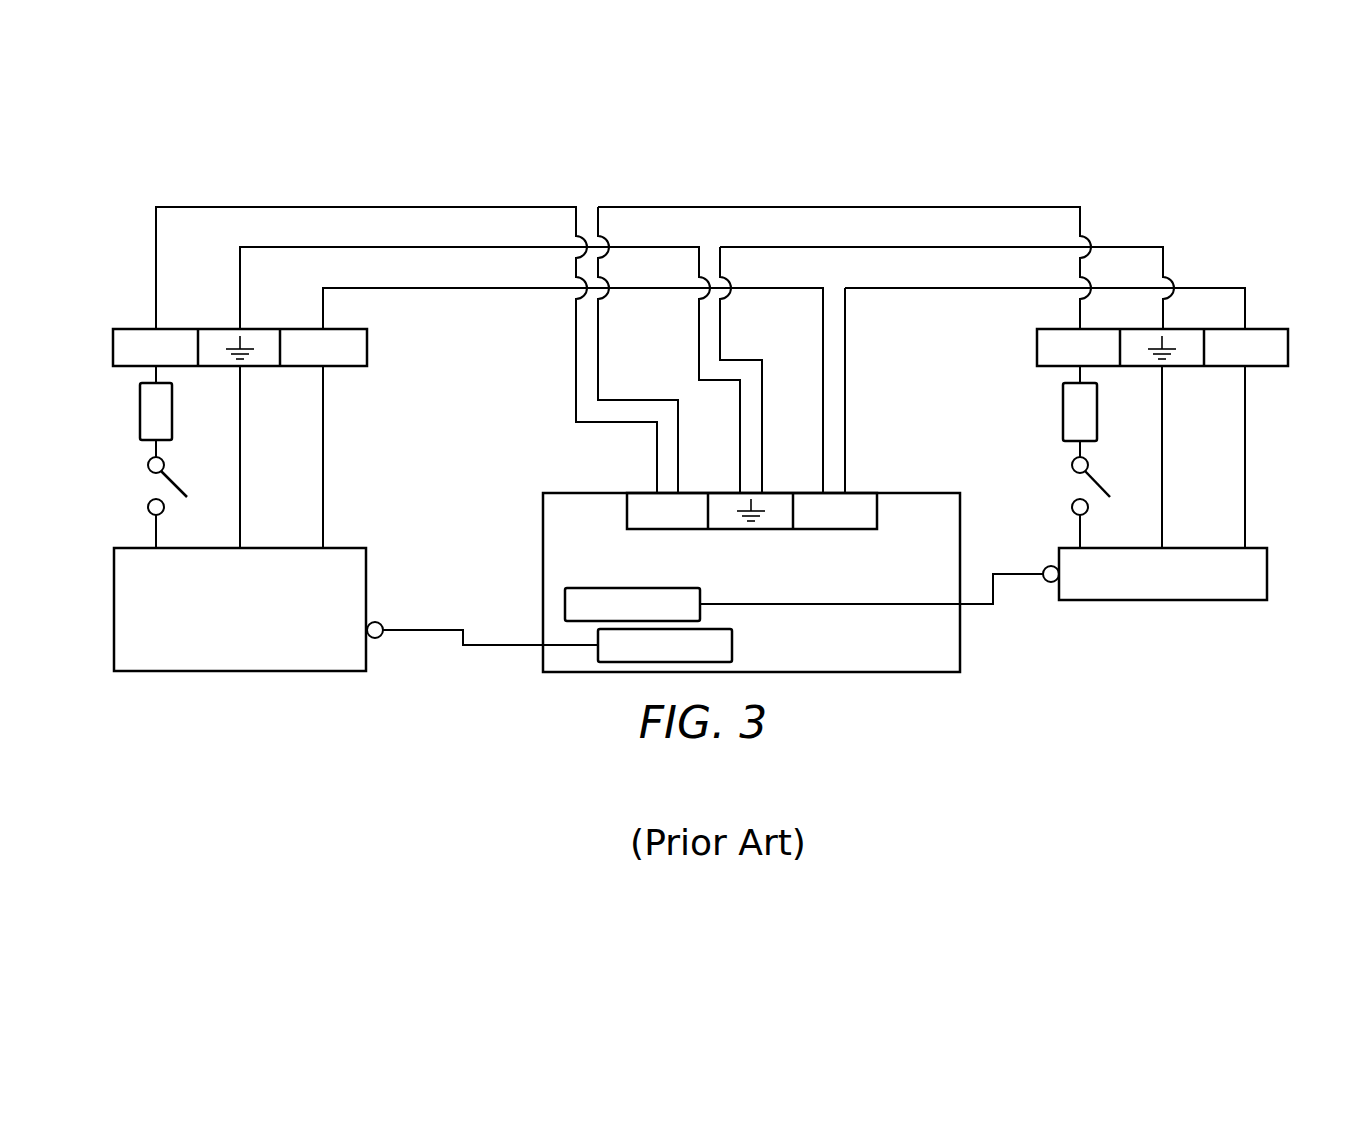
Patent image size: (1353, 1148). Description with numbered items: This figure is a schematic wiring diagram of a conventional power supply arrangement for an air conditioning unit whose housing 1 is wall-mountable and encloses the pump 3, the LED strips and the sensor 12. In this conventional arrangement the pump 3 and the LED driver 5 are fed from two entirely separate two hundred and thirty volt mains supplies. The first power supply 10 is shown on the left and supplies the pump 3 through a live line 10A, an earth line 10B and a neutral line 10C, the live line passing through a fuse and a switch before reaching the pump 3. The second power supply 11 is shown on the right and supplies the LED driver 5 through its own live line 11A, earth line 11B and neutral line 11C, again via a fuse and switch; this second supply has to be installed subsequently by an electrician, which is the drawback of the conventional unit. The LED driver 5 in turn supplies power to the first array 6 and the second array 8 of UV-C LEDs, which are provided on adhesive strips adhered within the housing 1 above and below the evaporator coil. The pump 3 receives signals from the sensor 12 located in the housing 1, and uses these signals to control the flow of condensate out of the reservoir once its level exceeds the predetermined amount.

The housing 1 is at (960, 505).
The pump 3 is at (346, 672).
The LED driver 5 is at (1253, 601).
The first array 6 is at (593, 588).
The second array 8 is at (632, 604).
The first power supply 10 is at (327, 186).
The live line 10A is at (448, 207).
The earth line 10B is at (521, 247).
The neutral line 10C is at (449, 292).
The second power supply 11 is at (1108, 181).
The live line 11A is at (952, 207).
The earth line 11B is at (1026, 247).
The neutral line 11C is at (954, 292).
The sensor 12 is at (732, 645).